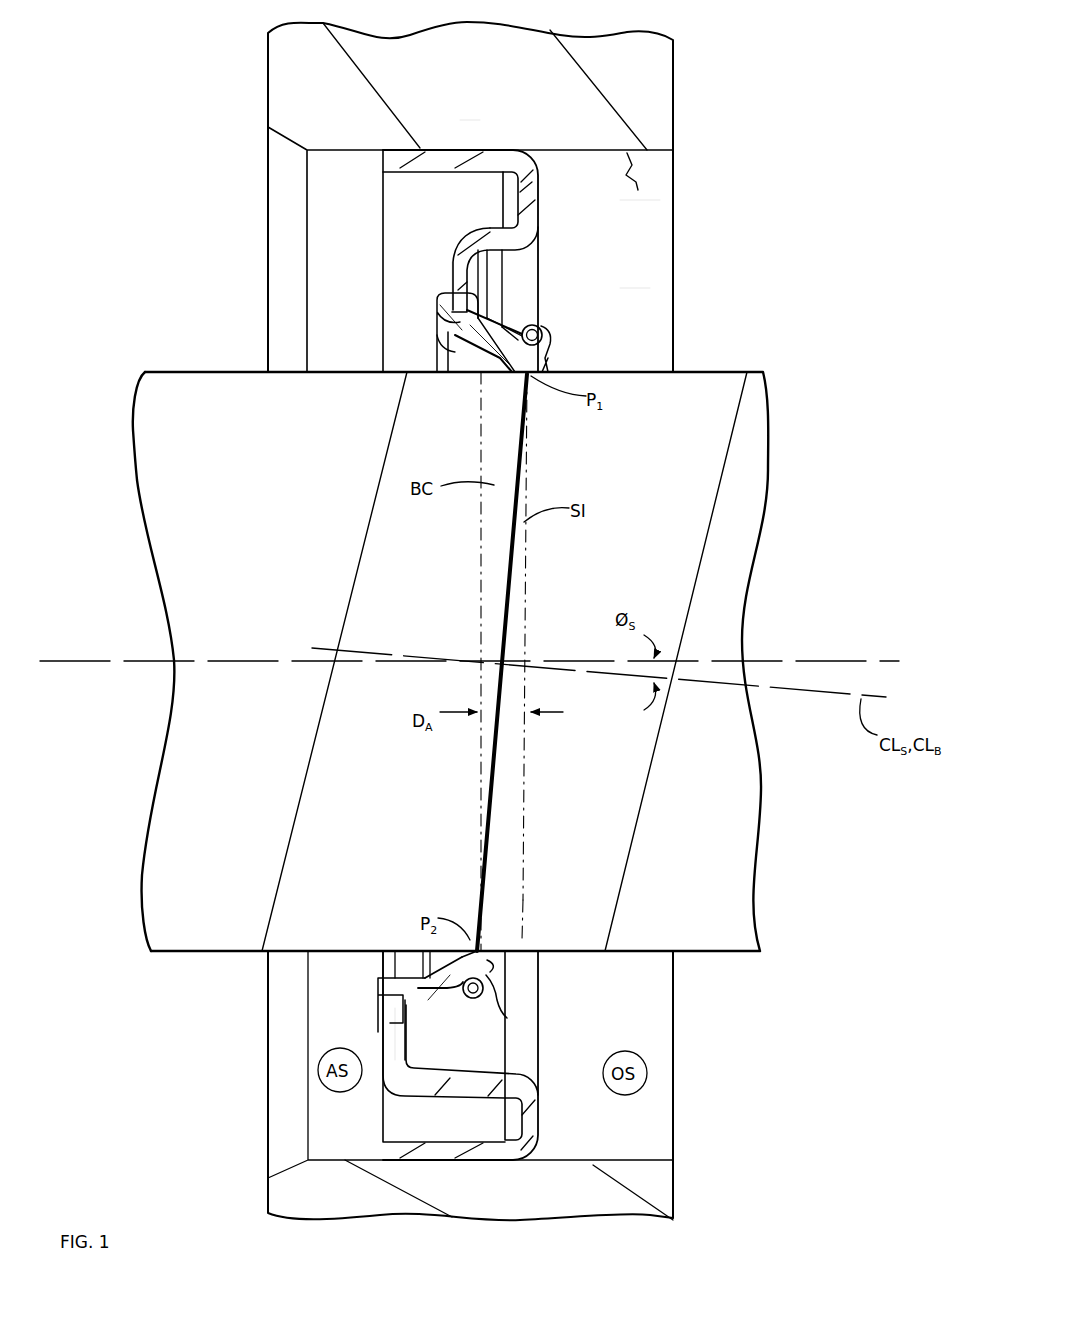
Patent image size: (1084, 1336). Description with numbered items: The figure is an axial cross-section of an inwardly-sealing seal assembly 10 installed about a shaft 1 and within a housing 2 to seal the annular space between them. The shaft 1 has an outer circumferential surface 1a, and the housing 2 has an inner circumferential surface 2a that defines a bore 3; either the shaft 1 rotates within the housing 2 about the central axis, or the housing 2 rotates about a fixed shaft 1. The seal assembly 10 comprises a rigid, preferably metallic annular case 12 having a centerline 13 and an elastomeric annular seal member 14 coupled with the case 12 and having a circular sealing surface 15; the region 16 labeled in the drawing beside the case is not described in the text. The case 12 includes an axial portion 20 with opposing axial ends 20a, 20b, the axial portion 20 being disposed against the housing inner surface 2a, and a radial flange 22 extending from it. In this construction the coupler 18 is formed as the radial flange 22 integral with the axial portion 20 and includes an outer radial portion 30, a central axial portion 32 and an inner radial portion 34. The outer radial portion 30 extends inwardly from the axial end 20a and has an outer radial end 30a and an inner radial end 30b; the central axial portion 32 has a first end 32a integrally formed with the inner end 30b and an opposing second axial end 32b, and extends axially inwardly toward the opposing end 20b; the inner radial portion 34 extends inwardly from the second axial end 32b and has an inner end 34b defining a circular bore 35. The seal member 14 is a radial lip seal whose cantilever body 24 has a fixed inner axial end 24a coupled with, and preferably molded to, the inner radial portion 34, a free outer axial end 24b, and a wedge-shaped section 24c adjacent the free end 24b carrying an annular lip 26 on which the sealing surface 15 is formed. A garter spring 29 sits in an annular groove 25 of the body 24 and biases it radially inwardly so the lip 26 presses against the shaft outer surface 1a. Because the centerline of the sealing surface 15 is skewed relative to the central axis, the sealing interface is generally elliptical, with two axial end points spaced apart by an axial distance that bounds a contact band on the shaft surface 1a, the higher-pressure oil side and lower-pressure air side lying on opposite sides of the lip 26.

The shaft 1 is at (150, 408).
The outer circumferential surface 1a is at (727, 370).
The housing 2 is at (658, 102).
The inner circumferential surface 2a is at (637, 184).
The bore 3 is at (645, 238).
The seal assembly 10 is at (620, 288).
The annular case 12 is at (470, 123).
The centerline 13 is at (844, 665).
The annular seal member 14 is at (417, 322).
The sealing surface 15 is at (522, 940).
The cavity 16 is at (395, 252).
The coupler 18 is at (523, 263).
The axial portion 20 is at (460, 233).
The axial end 20a is at (505, 157).
The axial end 20b is at (388, 155).
The radial flange 22 is at (543, 200).
The cantilever body 24 is at (450, 987).
The fixed inner axial end 24a is at (382, 1005).
The free outer axial end 24b is at (505, 1018).
The wedge-shaped section 24c is at (492, 968).
The annular groove 25 is at (537, 328).
The annular lip 26 is at (511, 374).
The garter spring 29 is at (527, 327).
The outer radial portion 30 is at (523, 193).
The outer radial end 30a is at (523, 1137).
The inner radial end 30b is at (523, 1107).
The central axial portion 32 is at (487, 230).
The first end 32a is at (517, 1087).
The second axial end 32b is at (418, 1080).
The inner radial portion 34 is at (460, 267).
The inner end 34b is at (395, 1008).
The circular bore 35 is at (450, 340).